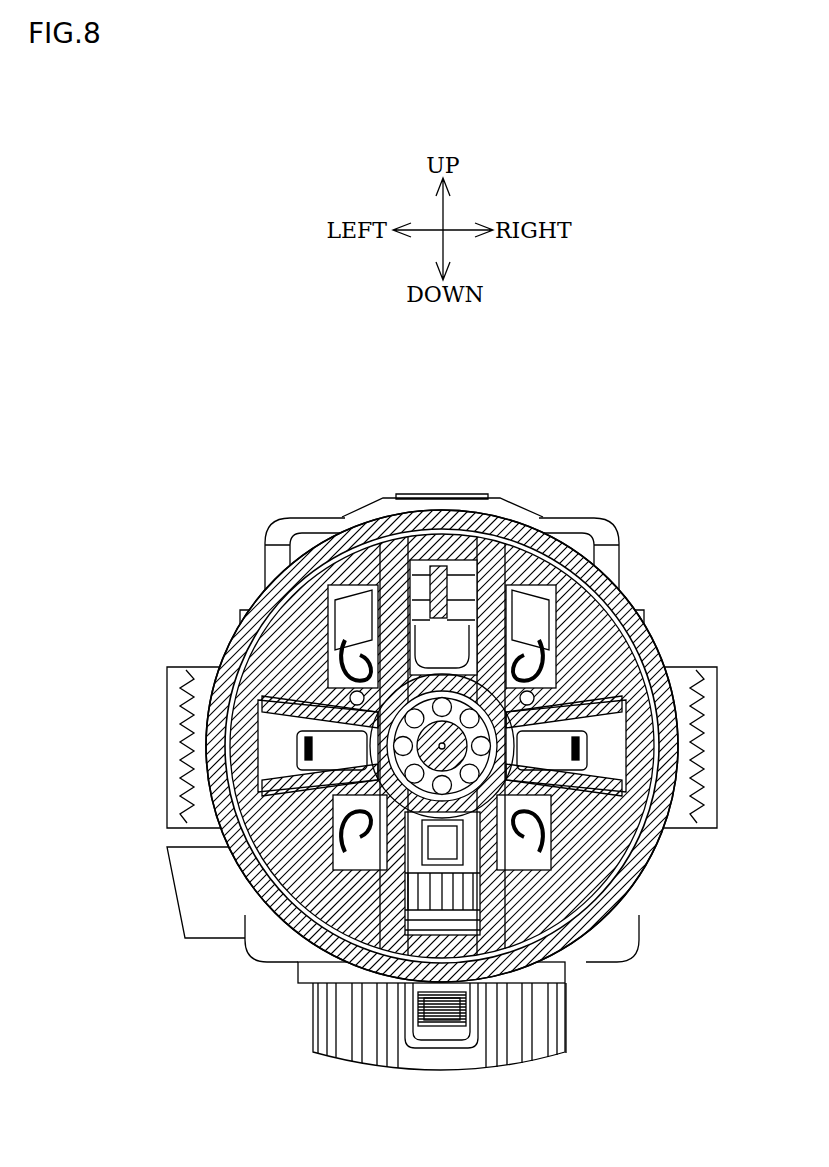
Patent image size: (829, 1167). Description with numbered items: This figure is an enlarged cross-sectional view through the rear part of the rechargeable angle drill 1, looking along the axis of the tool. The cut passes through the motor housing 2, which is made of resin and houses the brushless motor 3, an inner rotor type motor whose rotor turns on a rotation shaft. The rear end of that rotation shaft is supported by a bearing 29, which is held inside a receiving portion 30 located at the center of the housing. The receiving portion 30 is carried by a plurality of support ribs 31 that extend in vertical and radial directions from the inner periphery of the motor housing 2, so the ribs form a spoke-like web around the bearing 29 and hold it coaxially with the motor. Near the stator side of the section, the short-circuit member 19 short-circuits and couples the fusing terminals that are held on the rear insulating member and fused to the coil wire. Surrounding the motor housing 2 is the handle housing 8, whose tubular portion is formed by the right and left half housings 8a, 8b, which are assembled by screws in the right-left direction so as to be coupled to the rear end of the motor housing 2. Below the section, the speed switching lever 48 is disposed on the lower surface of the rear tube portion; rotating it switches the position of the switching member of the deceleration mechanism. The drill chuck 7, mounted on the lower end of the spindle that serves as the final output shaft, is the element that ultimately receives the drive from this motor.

The angle drill 1 is at (625, 450).
The motor housing 2 is at (643, 596).
The brushless motor 3 is at (338, 518).
The drill chuck 7 is at (560, 1020).
The handle housing 8 is at (548, 520).
The half housing 8a is at (238, 637).
The half housing 8b is at (646, 637).
The short-circuit member 19 is at (425, 560).
The bearing 29 is at (596, 517).
The receiving portion 30 is at (455, 677).
The support ribs 31 is at (240, 680).
The speed switching lever 48 is at (445, 1025).